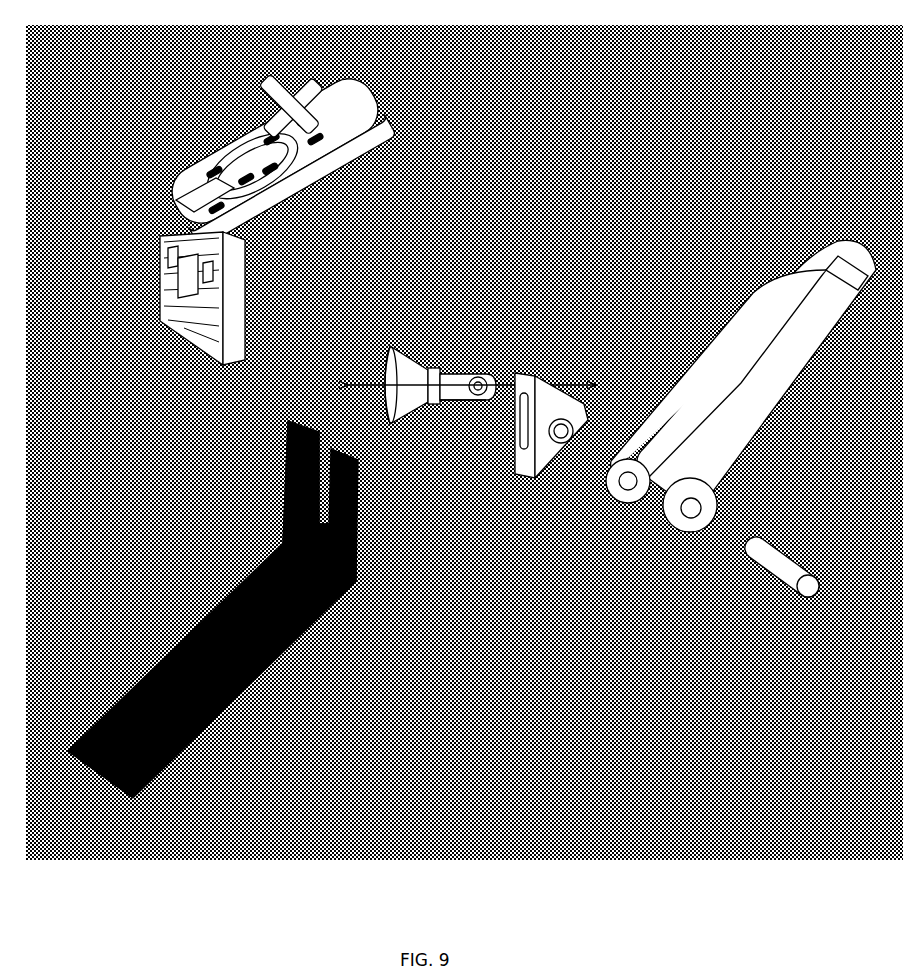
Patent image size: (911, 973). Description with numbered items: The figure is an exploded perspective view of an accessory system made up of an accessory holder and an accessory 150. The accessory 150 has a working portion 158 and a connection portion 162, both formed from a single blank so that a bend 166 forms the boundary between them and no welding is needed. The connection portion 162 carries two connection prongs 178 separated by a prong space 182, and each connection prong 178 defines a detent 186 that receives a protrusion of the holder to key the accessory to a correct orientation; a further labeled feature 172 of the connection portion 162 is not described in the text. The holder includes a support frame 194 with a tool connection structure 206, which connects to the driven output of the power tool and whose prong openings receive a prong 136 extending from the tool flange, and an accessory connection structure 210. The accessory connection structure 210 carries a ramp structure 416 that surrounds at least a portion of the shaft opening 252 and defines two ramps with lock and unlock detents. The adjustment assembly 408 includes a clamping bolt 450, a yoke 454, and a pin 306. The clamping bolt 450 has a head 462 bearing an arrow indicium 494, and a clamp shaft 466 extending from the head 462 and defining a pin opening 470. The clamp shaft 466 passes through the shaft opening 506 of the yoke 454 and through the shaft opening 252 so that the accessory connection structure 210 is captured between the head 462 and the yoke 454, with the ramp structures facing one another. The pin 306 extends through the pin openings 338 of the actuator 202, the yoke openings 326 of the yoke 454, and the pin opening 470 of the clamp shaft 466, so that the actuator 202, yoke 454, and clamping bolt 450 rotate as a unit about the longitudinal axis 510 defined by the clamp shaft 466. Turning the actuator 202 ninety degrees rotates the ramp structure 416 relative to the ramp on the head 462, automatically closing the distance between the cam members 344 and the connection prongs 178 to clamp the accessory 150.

The support frame 194 is at (174, 110).
The tool connection structure 206 is at (250, 102).
The shaft opening 252 is at (168, 214).
The accessory connection structure 210 is at (150, 318).
The ramp structure 416 is at (178, 332).
The accessory 150 is at (172, 580).
The working portion 158 is at (182, 738).
The connection portion 162 is at (350, 546).
The bend 166 is at (338, 590).
The detent 186 is at (350, 520).
The prong 136 is at (285, 449).
The connection prong 178 is at (300, 408).
The prong space 182 is at (322, 426).
The prong 172 is at (334, 446).
The clamping bolt 450 is at (412, 377).
The arrow indicium 494 is at (388, 348).
The longitudinal axis 510 is at (348, 368).
The head 462 is at (400, 416).
The pin opening 470 is at (472, 364).
The clamp shaft 466 is at (438, 394).
The yoke 454 is at (535, 444).
The shaft opening 506 is at (500, 452).
The yoke opening 326 is at (555, 444).
The actuator 202 is at (710, 441).
The cam member 344 is at (620, 496).
The pin opening 338 is at (682, 526).
The adjustment assembly 408 is at (550, 564).
The pin 306 is at (770, 544).